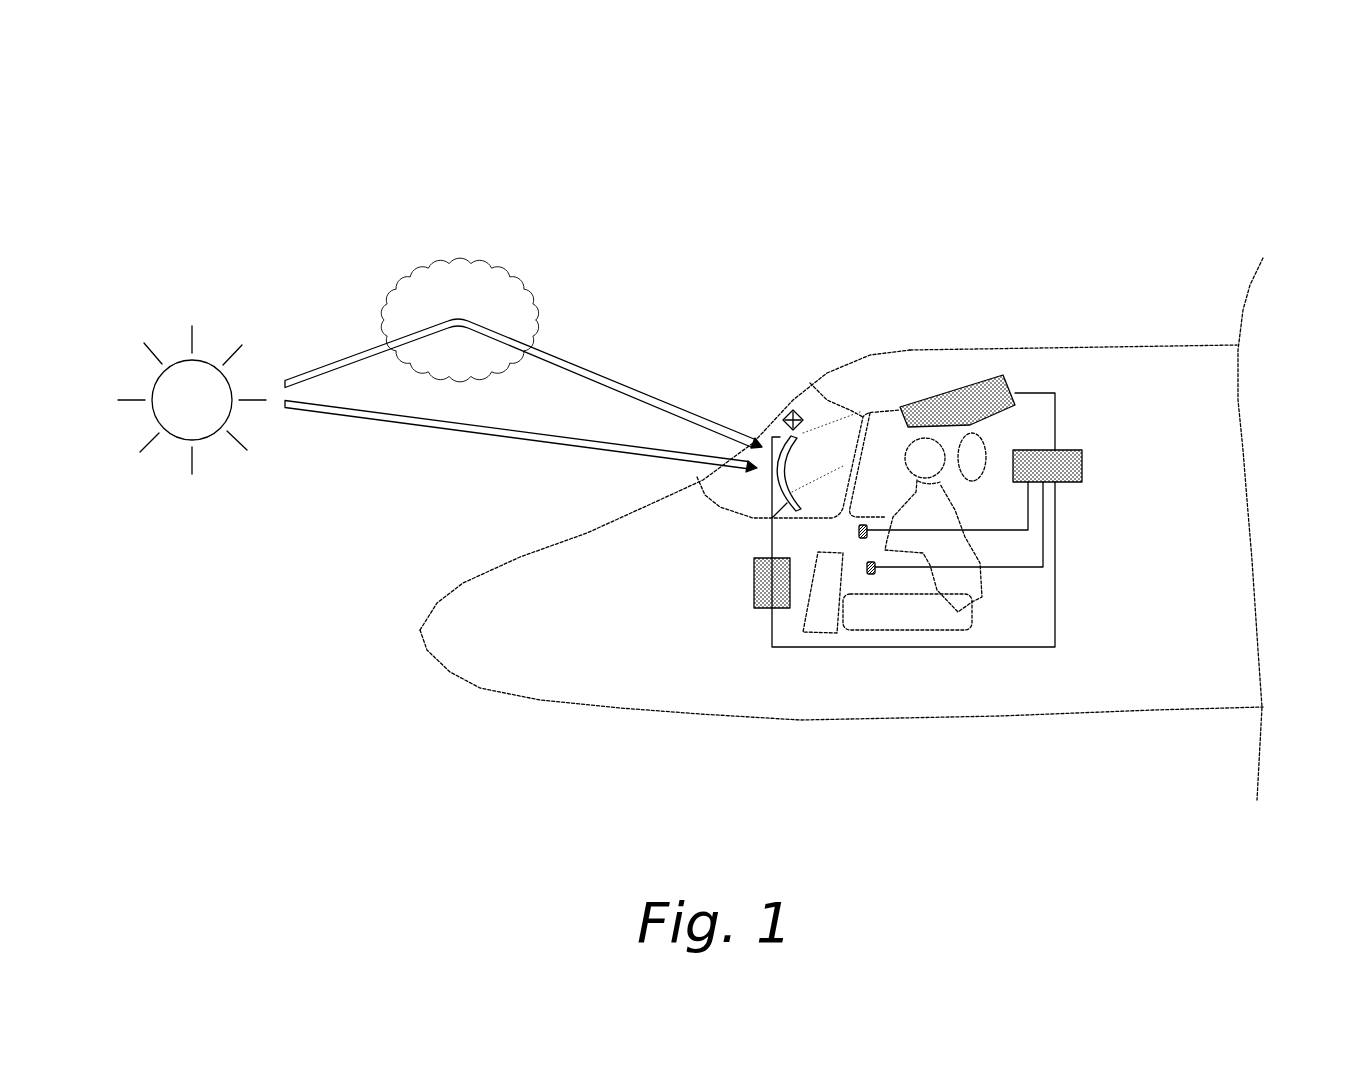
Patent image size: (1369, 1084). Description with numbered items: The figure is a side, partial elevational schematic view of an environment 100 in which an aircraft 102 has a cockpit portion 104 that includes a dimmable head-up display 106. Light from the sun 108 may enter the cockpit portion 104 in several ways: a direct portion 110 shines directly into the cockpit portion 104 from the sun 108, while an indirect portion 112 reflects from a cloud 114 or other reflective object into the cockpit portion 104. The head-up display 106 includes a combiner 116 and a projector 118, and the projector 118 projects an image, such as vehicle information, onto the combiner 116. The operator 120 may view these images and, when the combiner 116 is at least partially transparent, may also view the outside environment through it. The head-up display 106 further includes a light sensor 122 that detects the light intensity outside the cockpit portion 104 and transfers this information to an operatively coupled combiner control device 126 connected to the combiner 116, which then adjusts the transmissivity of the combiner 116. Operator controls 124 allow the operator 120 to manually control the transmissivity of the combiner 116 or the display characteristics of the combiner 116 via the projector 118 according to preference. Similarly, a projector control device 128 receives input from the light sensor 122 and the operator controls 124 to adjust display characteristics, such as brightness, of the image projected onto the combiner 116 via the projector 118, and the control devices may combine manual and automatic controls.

The environment 100 is at (163, 118).
The aircraft 102 is at (1153, 710).
The cockpit portion 104 is at (688, 755).
The dimmable head-up display 106 is at (837, 348).
The sun 108 is at (178, 362).
The direct portion 110 is at (433, 430).
The indirect portion 112 is at (572, 365).
The cloud 114 is at (462, 260).
The combiner 116 is at (779, 440).
The projector 118 is at (965, 383).
The operator 120 is at (945, 490).
The light sensor 122 is at (793, 410).
The operator controls 124 is at (861, 540).
The combiner control device 126 is at (760, 608).
The projector control device 128 is at (1083, 472).